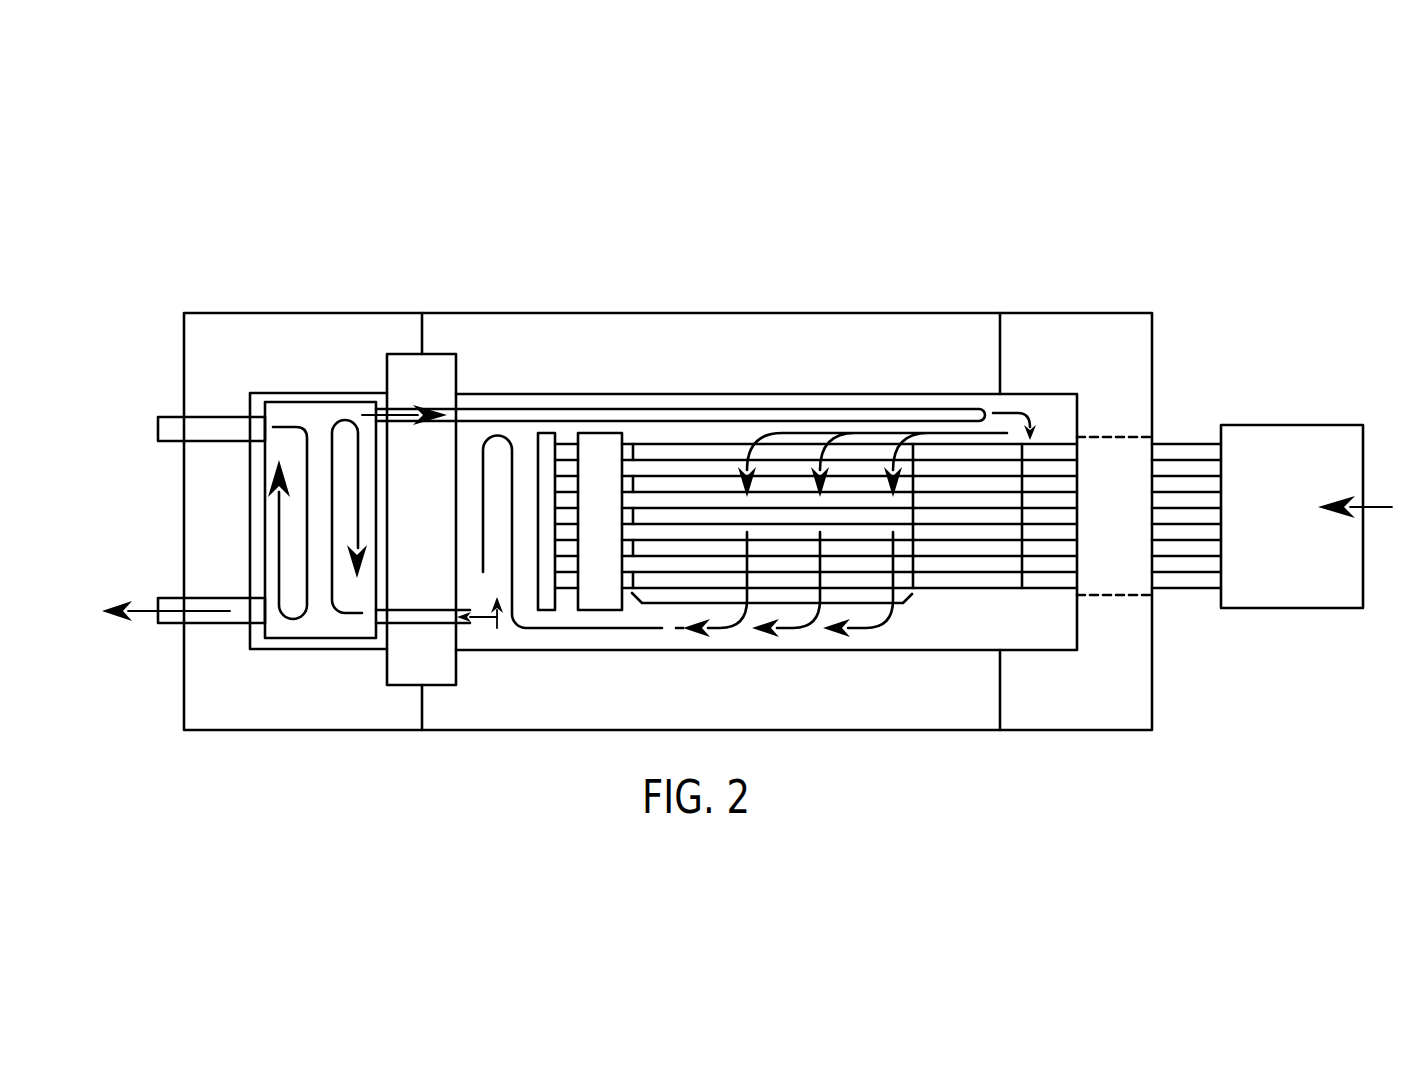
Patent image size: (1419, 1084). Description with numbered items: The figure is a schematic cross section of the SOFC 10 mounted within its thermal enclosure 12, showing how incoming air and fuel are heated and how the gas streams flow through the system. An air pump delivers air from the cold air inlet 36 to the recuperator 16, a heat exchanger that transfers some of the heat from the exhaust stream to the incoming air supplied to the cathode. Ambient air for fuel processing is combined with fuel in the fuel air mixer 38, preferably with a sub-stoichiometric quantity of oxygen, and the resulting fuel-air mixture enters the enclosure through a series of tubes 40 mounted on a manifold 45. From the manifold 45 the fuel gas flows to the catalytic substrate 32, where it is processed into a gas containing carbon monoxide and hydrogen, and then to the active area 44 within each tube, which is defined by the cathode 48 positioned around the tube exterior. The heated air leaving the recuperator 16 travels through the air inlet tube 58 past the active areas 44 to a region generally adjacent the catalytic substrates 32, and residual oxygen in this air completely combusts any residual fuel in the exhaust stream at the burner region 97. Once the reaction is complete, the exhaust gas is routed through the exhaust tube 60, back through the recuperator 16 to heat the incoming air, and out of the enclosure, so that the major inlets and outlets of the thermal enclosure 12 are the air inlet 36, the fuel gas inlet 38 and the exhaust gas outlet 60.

The SOFC 10 is at (694, 256).
The thermal enclosure 12 is at (232, 333).
The recuperator 16 is at (332, 367).
The catalytic substrate 32 is at (1043, 492).
The cold air inlet 36 is at (122, 429).
The fuel air mixer 38 is at (1278, 407).
The tubes 40 is at (938, 580).
The active area 44 is at (667, 607).
The manifold 45 is at (1093, 468).
The cathode 48 is at (703, 512).
The air inlet tube 58 is at (890, 415).
The exhaust tube 60 is at (205, 623).
The burner region 97 is at (525, 437).